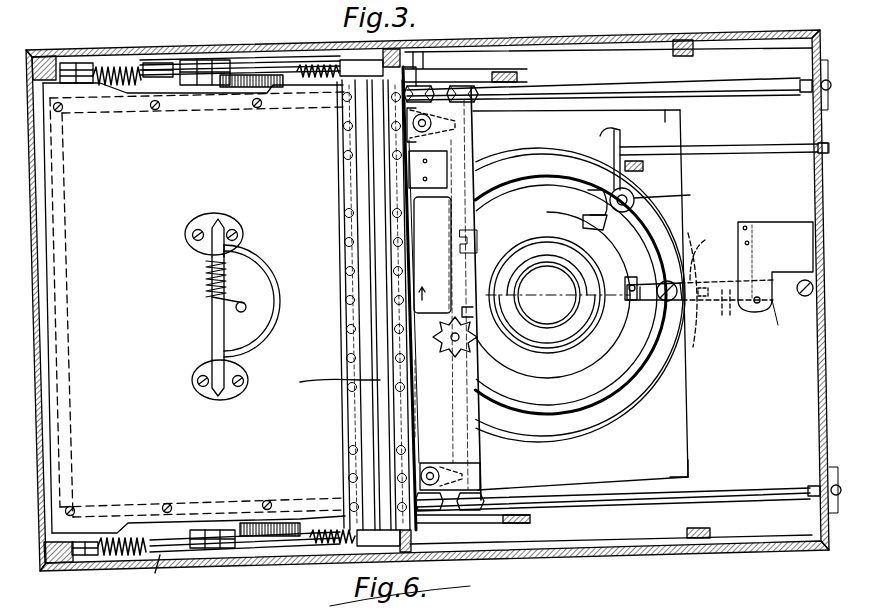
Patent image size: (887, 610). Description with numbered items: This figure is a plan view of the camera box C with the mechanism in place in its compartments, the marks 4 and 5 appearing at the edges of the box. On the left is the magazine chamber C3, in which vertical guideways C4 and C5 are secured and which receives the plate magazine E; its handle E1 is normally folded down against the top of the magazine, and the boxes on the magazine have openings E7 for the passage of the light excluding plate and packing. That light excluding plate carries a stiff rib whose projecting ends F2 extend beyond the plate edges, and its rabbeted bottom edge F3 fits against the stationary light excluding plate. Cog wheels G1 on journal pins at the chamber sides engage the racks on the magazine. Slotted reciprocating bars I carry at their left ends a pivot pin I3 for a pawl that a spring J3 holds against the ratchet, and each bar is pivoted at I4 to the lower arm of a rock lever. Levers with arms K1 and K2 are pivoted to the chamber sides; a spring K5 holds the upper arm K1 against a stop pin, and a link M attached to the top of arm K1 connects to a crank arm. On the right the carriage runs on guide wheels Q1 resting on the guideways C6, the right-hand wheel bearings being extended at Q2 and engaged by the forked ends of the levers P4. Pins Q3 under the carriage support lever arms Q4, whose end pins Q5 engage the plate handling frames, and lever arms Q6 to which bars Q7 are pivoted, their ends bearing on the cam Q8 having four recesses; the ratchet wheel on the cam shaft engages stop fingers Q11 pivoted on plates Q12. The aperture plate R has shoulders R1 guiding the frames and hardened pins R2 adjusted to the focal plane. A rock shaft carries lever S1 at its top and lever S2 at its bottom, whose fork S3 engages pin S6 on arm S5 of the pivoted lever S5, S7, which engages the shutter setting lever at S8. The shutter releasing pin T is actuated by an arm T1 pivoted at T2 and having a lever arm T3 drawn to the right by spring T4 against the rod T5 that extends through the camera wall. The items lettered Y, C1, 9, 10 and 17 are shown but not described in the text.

The section line 4- 4 is at (46, 304).
The section line 5- 5 is at (838, 300).
The plate magazine E is at (194, 308).
The cog wheels G1 is at (268, 100).
The handle E1 is at (268, 301).
The openings E7 is at (340, 370).
The projecting ends F2 is at (90, 64).
The spring K5 is at (118, 68).
The link M is at (158, 62).
The upper lever arm K1 is at (160, 62).
The bottom edge of light excluding plate F3 is at (207, 62).
The pivot pin I3 is at (245, 72).
The reciprocating bars I is at (270, 62).
The spring J3 is at (300, 64).
The lever arm K2 is at (330, 62).
The magazine chamber C3 is at (166, 576).
The vertical guideways C5 is at (56, 58).
The guideways C6 is at (640, 499).
The lever arms Q4 is at (362, 140).
The pins Q5 is at (380, 118).
The lever arms Q6 is at (458, 125).
The pins Q3 is at (455, 143).
The bars Q7 is at (445, 224).
The cam Q8 is at (452, 356).
The pin 17 is at (421, 285).
The pawl 9 is at (470, 293).
The stop 10 is at (464, 245).
The levers P4 is at (518, 76).
The pivot I4 is at (694, 55).
The extended bearings Q2 is at (435, 88).
The guide wheels Q1 is at (468, 88).
The vertical guideways C4 is at (418, 66).
The camera box C is at (510, 50).
The aperture plate R is at (647, 114).
The shoulders R1 is at (680, 122).
The hardened pins R2 is at (690, 470).
The dial Y is at (580, 295).
The lever arm T3 is at (606, 157).
The shutter releasing pin T is at (590, 212).
The arm T1 is at (599, 230).
The spring T4 is at (645, 167).
The rod T5 is at (730, 157).
The pivot T2 is at (670, 199).
The lever S1 is at (683, 263).
The engagement point S8 is at (630, 276).
The lever arm S7 is at (641, 286).
The lever arm S5 is at (698, 286).
The pin S6 is at (718, 278).
The lever S2 is at (722, 313).
The fork S3 is at (699, 294).
The casing wall C1 is at (677, 238).
The plates Q12 is at (775, 267).
The stop fingers Q11 is at (786, 326).